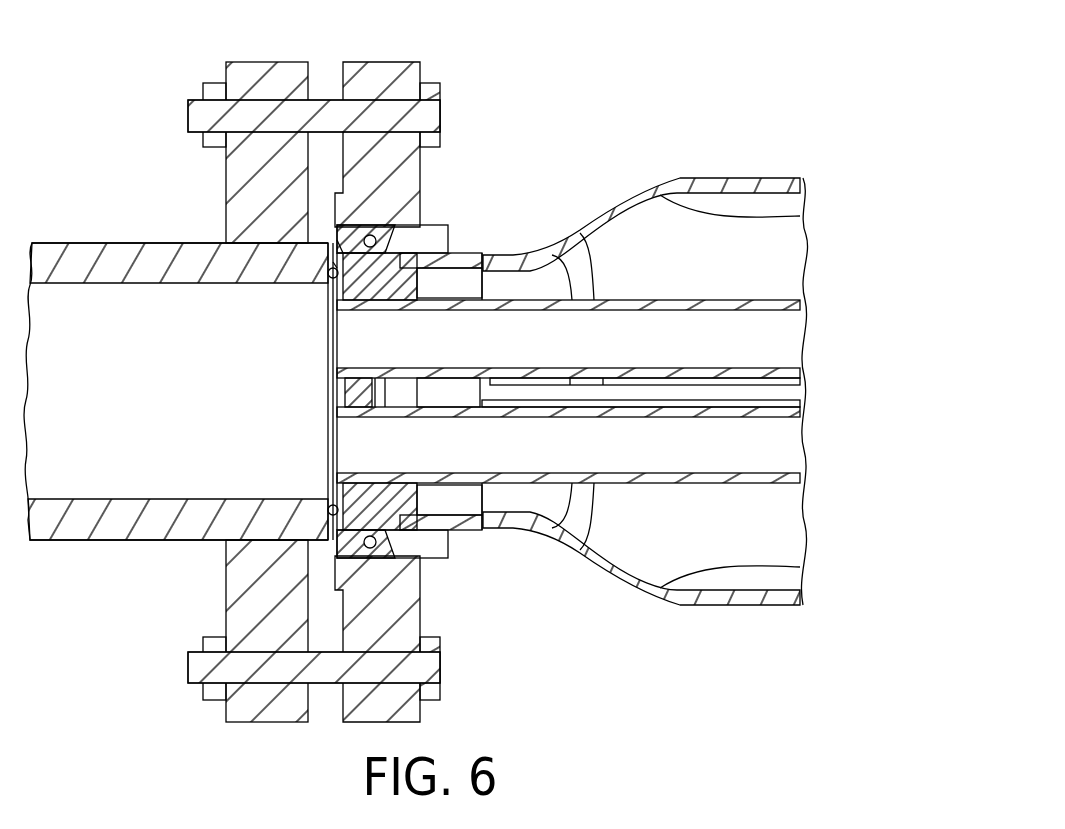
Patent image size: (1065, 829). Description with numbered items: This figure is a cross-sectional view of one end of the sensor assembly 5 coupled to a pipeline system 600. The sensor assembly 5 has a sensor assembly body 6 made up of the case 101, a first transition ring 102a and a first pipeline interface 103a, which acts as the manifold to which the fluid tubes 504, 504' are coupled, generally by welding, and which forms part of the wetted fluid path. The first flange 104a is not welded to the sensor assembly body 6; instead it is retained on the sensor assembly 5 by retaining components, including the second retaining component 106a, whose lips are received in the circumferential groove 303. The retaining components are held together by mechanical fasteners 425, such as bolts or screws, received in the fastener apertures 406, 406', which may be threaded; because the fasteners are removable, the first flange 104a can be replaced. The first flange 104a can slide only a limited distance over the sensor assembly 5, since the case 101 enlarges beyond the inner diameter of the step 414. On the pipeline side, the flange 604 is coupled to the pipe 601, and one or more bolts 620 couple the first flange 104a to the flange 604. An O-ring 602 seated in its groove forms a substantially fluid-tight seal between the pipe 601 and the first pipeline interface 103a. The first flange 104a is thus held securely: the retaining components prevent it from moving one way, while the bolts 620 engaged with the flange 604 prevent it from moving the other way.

The sensor assembly 5 is at (605, 130).
The sensor assembly body 6 is at (531, 618).
The case 101 is at (655, 180).
The first transition ring 102a is at (485, 222).
The first pipeline interface 103a is at (330, 265).
The first flange 104a is at (407, 62).
The second retaining component 106a is at (338, 250).
The circumferential groove 303 is at (398, 268).
The fastener aperture 406 is at (412, 566).
The fastener aperture 406' is at (406, 199).
The step 414 is at (458, 253).
The mechanical fastener 425 is at (377, 238).
The fluid tube 504 is at (568, 339).
The fluid tube 504' is at (568, 430).
The pipeline system 600 is at (88, 128).
The pipe 601 is at (78, 541).
The O-ring 602 is at (329, 279).
The flange 604 is at (250, 62).
The bolt 620 is at (440, 106).